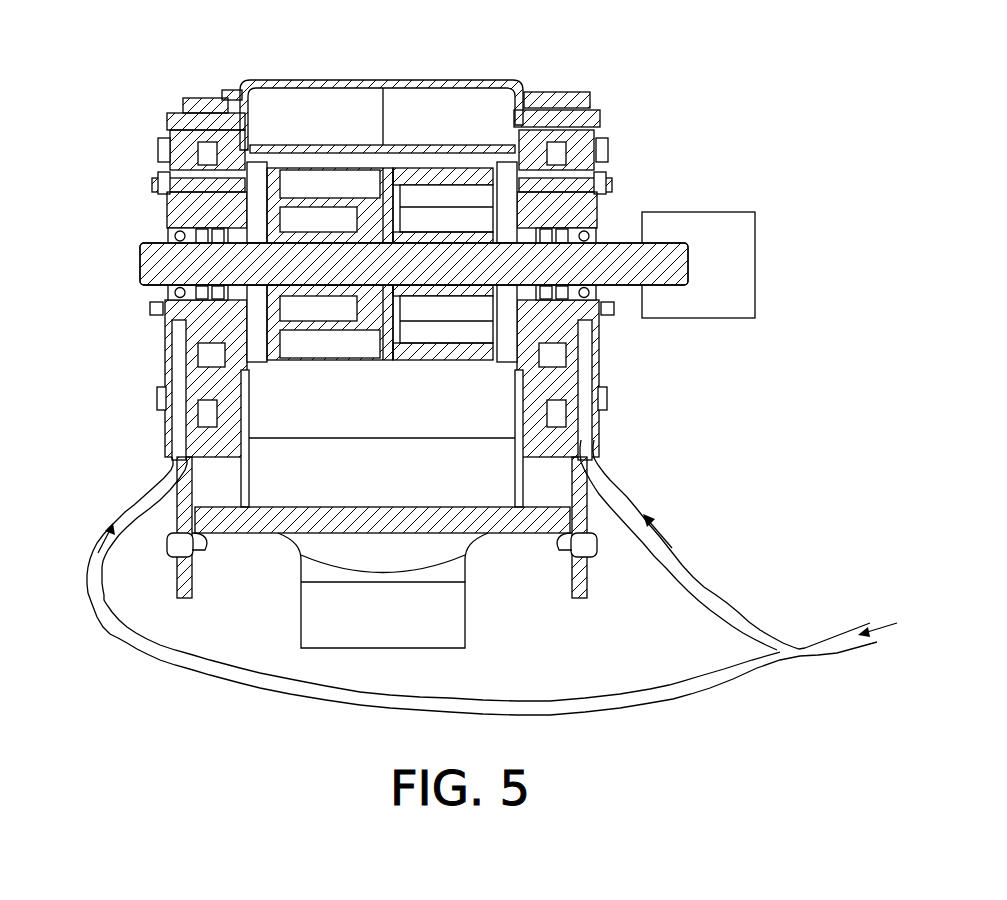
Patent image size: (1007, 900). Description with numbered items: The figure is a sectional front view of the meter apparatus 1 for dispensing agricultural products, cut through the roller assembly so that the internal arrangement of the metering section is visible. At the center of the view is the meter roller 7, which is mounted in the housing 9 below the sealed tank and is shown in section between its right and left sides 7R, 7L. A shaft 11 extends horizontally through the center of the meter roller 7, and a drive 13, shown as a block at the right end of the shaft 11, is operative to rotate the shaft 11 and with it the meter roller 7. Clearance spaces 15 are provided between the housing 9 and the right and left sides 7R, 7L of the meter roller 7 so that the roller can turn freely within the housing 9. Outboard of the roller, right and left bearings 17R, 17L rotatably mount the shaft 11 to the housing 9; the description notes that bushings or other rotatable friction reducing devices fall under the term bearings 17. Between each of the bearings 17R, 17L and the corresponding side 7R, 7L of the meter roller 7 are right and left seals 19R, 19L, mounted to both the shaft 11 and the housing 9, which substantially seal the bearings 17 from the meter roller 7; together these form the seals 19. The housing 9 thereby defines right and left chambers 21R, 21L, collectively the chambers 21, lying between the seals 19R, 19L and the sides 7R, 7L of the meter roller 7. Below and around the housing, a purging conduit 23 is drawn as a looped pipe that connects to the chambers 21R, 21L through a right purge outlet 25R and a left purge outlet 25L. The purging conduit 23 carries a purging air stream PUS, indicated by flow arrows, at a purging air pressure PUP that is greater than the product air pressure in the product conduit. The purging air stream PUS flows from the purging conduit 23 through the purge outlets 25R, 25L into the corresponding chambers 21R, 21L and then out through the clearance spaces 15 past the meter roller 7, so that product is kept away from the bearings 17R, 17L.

The meter apparatus 1 is at (800, 88).
The meter roller 7 is at (380, 189).
The left side of the meter roller 7L is at (300, 195).
The right side of the meter roller 7R is at (470, 195).
The housing 9 is at (575, 96).
The shaft 11 is at (612, 252).
The drive 13 is at (735, 212).
The clearance spaces 15 is at (280, 160).
The bearings 17 is at (366, 291).
The left bearing 17L is at (168, 296).
The right bearing 17R is at (603, 290).
The seals 19 is at (354, 379).
The left seal 19L is at (197, 328).
The right seal 19R is at (608, 151).
The chambers 21 is at (370, 278).
The left chamber 21L is at (257, 220).
The right chamber 21R is at (507, 317).
The purging conduit 23 is at (833, 655).
The left purge outlet 25L is at (160, 478).
The right purge outlet 25R is at (607, 468).
The purging air stream PUS is at (95, 548).
The purging air pressure PUP is at (752, 622).